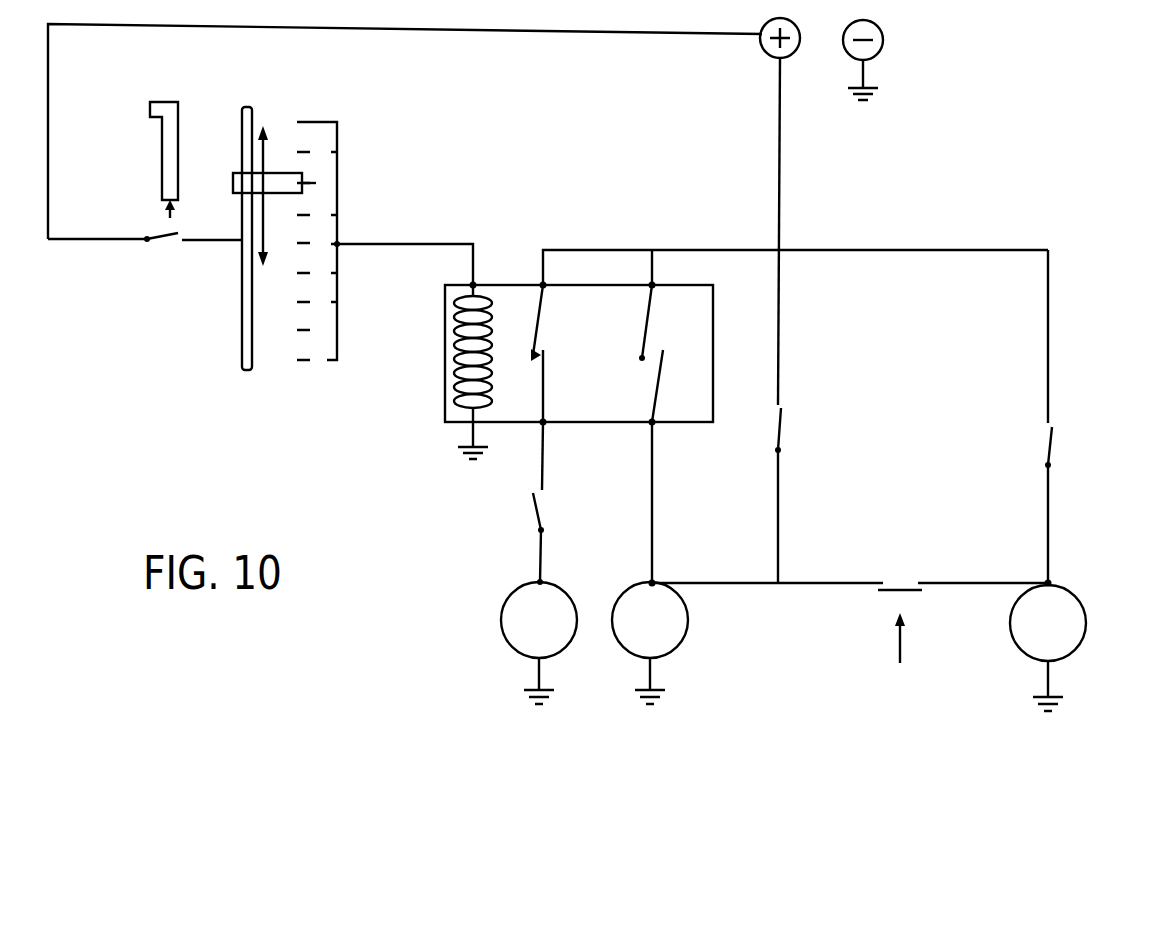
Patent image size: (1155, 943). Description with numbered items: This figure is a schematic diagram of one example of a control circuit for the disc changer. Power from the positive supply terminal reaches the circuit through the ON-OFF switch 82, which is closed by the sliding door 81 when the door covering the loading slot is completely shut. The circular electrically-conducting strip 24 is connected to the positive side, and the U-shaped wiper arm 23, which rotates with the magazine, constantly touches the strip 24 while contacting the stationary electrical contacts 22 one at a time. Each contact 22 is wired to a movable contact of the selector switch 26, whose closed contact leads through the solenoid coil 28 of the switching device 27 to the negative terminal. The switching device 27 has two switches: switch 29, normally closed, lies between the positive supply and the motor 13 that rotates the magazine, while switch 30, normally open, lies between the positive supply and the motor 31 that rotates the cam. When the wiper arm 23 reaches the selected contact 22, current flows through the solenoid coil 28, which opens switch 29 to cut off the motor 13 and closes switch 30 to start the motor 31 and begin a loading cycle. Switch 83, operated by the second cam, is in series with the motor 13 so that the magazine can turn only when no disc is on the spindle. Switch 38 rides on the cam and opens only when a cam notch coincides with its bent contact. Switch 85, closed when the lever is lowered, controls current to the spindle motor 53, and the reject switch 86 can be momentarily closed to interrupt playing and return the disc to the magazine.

The motor 13 is at (527, 642).
The stationary electrical contacts 22 is at (307, 148).
The wiper arm 23 is at (277, 173).
The circular electrically-conducting strip 24 is at (245, 107).
The selector switch 26 is at (337, 215).
The switching device 27 is at (517, 422).
The solenoid coil 28 is at (452, 358).
The switch 29 is at (557, 355).
The switch 30 is at (668, 353).
The motor 31 is at (660, 643).
The switch 38 is at (795, 423).
The spindle motor 53 is at (1027, 647).
The sliding door 81 is at (170, 102).
The ON-OFF switch 82 is at (168, 243).
The switch 83 is at (518, 518).
The switch 85 is at (1068, 448).
The reject switch 86 is at (900, 582).